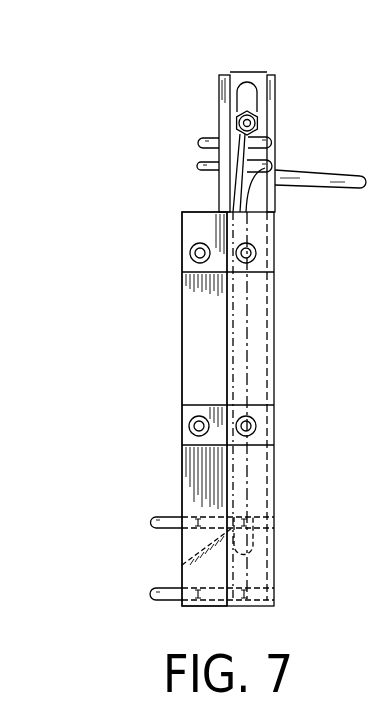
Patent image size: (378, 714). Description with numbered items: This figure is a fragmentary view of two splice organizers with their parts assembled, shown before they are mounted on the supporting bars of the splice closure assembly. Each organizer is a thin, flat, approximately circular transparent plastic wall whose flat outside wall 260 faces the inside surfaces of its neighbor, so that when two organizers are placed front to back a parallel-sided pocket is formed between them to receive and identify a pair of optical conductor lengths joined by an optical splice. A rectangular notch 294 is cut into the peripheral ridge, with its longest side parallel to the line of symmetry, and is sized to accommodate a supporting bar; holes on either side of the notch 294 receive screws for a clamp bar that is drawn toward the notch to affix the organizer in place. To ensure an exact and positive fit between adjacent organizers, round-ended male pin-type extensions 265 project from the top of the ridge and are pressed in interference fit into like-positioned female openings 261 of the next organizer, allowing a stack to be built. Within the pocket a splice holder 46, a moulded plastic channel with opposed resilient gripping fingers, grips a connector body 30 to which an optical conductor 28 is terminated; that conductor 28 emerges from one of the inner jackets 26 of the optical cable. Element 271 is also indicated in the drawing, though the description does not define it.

The inner jackets 26 is at (326, 180).
The optical conductors 28 is at (235, 182).
The connector body 30 is at (253, 108).
The splice holder 46 is at (247, 72).
The outside wall 260 is at (275, 375).
The female openings 261 is at (270, 522).
The pin-type extensions 265 is at (168, 517).
The tabs 271 is at (206, 138).
The notch 294 is at (205, 320).